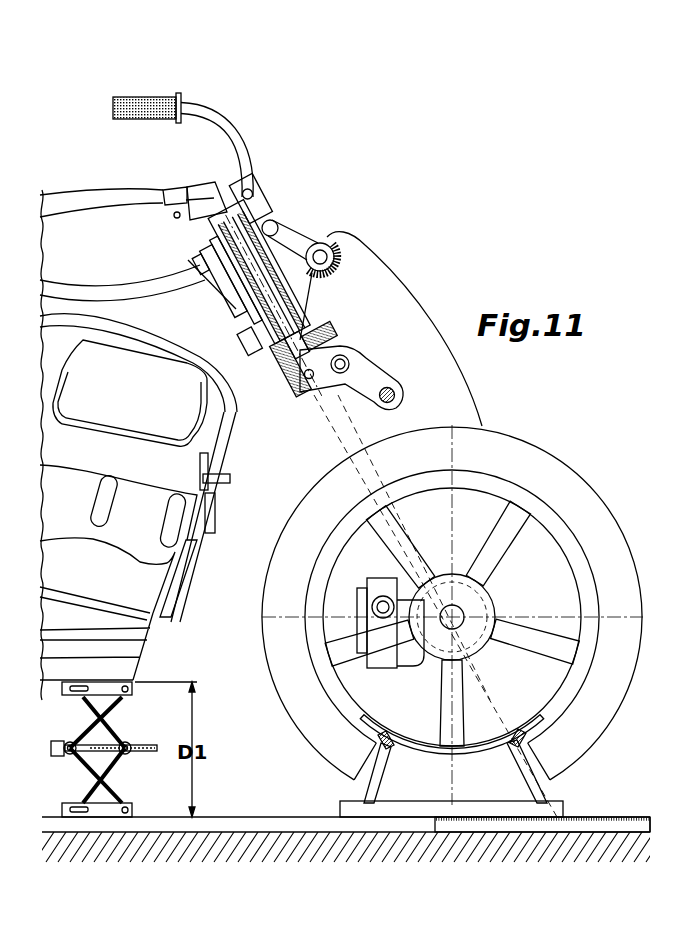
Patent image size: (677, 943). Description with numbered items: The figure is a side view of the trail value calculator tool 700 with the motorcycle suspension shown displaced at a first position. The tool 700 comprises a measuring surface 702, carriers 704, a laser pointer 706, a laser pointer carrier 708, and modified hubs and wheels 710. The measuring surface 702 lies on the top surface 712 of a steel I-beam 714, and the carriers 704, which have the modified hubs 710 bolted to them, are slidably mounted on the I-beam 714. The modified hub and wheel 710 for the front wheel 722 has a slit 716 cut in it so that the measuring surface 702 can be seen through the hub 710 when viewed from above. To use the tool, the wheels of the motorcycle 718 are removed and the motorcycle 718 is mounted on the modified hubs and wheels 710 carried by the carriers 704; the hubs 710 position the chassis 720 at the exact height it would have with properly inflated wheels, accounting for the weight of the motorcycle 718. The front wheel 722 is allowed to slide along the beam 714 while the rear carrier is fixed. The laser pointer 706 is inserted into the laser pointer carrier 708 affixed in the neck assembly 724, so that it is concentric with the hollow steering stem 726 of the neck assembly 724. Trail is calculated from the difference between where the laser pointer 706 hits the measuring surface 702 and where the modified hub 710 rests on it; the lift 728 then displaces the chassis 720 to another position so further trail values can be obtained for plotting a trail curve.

The trail value calculator tool 700 is at (400, 197).
The measuring surface 702 is at (590, 817).
The carriers 704 is at (430, 792).
The laser pointer 706 is at (183, 228).
The laser pointer carrier 708 is at (258, 198).
The modified hub and wheel 710 is at (565, 528).
The top surface 712 is at (615, 816).
The steel I-beam 714 is at (253, 817).
The slit 716 is at (498, 742).
The motorcycle 718 is at (393, 272).
The chassis 720 is at (233, 437).
The front wheel 722 is at (528, 453).
The neck assembly 724 is at (200, 262).
The hollow steering stem 726 is at (200, 264).
The lift 728 is at (114, 726).